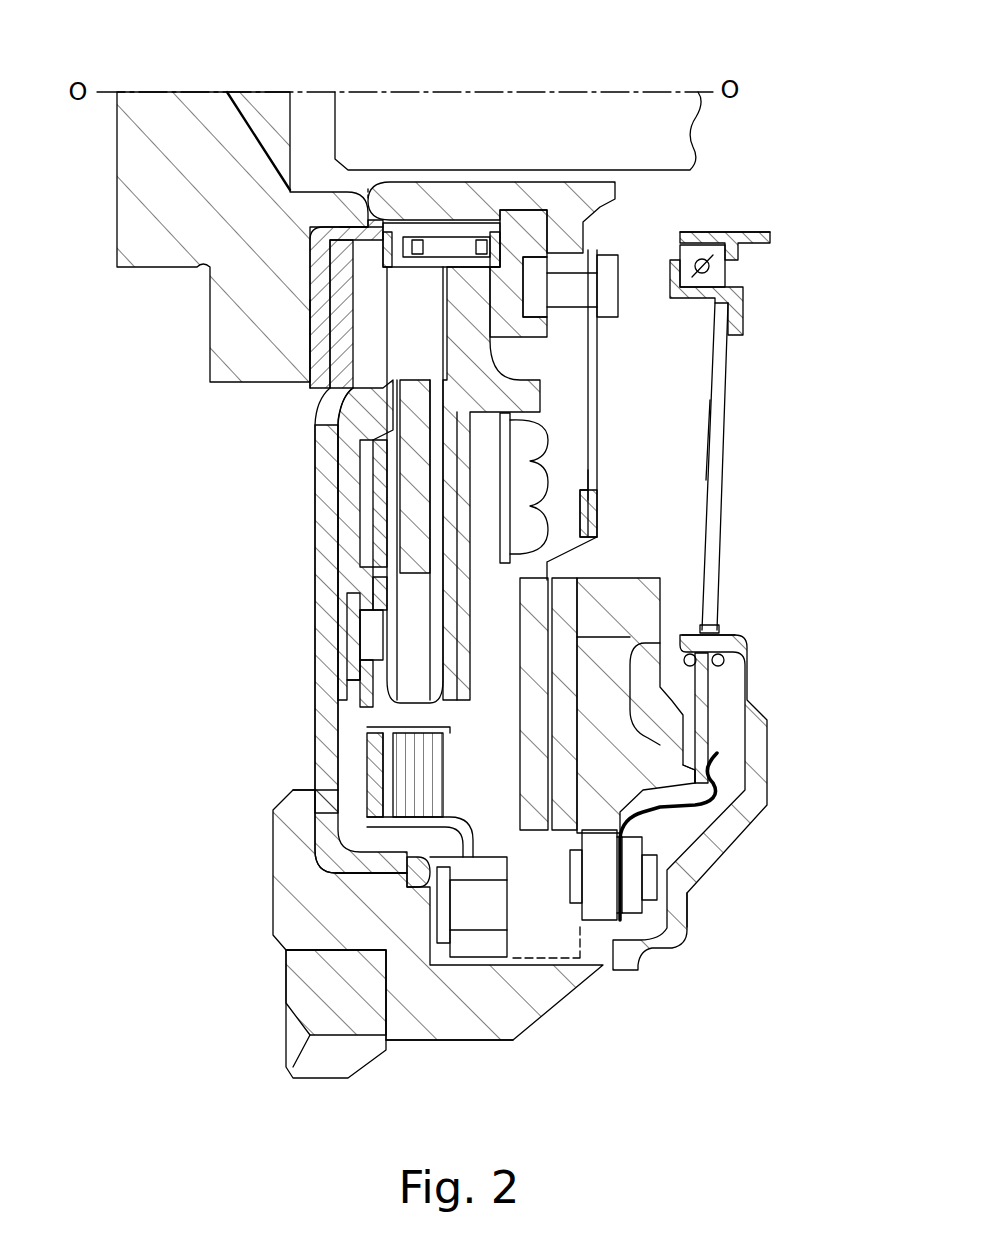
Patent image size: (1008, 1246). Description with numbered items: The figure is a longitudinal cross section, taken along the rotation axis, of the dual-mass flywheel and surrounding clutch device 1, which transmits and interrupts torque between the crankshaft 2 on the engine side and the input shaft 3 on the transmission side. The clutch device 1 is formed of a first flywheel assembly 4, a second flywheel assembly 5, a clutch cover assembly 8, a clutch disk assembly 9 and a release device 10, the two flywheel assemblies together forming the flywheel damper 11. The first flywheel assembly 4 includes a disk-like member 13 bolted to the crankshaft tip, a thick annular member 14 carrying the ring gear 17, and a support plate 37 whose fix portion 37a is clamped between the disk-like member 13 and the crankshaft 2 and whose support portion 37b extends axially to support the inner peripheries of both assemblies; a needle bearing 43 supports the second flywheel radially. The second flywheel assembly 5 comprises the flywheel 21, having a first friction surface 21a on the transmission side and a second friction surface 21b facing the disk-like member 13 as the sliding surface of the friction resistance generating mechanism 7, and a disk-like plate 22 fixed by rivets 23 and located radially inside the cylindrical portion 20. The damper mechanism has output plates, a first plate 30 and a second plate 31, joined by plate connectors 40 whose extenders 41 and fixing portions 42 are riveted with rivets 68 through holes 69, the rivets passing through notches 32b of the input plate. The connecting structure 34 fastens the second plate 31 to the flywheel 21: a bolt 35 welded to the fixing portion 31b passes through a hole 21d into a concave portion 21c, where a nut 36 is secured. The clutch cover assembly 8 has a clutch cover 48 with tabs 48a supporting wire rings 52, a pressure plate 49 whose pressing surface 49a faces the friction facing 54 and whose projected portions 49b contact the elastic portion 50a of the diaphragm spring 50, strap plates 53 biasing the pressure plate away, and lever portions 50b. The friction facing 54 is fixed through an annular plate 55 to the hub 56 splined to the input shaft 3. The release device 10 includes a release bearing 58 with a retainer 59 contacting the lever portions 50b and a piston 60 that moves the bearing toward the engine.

The clutch device 1 is at (765, 212).
The crankshaft 2 is at (148, 172).
The input shaft 3 is at (516, 124).
The first flywheel assembly 4 is at (252, 878).
The second flywheel assembly 5 is at (545, 970).
The friction resistance generating mechanism 7 is at (400, 706).
The clutch cover assembly 8 is at (745, 855).
The clutch disk assembly 9 is at (602, 484).
The release device 10 is at (738, 277).
The flywheel damper 11 is at (359, 480).
The disk-like member 13 is at (333, 505).
The annular member 14 is at (445, 1042).
The ring gear 17 is at (310, 993).
The cylindrical portion 20 is at (370, 867).
The flywheel 21 is at (505, 880).
The first friction surface 21a is at (545, 920).
The second friction surface 21b is at (390, 873).
The concave portion 21c is at (551, 432).
The hole 21d is at (590, 516).
The disk-like plate 22 is at (346, 840).
The rivet 23 is at (470, 910).
The first plate 30 is at (347, 540).
The second plate 31 is at (552, 567).
The fixing portion 31b is at (498, 400).
The notch 32b is at (410, 585).
The connecting structure 34 is at (590, 440).
The bolt 35 is at (466, 483).
The nut 36 is at (534, 490).
The support plate 37 is at (304, 244).
The fix portion 37a is at (320, 338).
The support portion 37b is at (420, 222).
The plate connector 40 is at (371, 745).
The extender 41 is at (367, 692).
The fixing portion 42 is at (377, 597).
The needle bearing 43 is at (443, 222).
The clutch cover 48 is at (755, 765).
The tab 48a is at (700, 630).
The pressure plate 49 is at (705, 600).
The pressing surface 49a is at (617, 657).
The projected portion 49b is at (680, 767).
The diaphragm spring 50 is at (742, 380).
The elastic portion 50a is at (712, 668).
The lever portion 50b is at (718, 445).
The wire ring 52 is at (727, 640).
The strap plate 53 is at (645, 945).
The friction facing 54 is at (560, 822).
The annular plate 55 is at (598, 382).
The hub 56 is at (558, 200).
The release bearing 58 is at (674, 255).
The retainer 59 is at (690, 302).
The piston 60 is at (752, 231).
The rivet 68 is at (368, 633).
The hole 69 is at (690, 812).